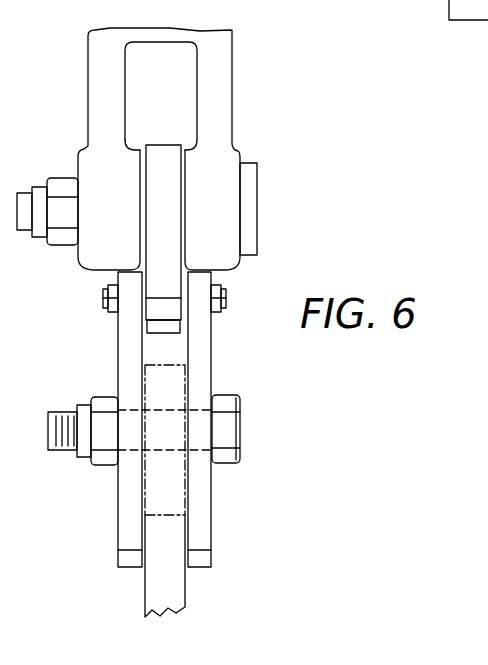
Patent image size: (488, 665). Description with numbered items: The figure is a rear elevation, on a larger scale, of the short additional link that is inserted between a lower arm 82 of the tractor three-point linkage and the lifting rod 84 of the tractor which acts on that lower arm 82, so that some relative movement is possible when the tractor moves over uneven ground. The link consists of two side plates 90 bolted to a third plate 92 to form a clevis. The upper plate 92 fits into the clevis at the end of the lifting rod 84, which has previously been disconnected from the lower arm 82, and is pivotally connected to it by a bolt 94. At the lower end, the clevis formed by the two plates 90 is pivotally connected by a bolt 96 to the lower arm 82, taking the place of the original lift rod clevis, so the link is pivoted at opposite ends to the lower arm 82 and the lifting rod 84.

The lifting rod 84 is at (232, 88).
The bolt 94 is at (257, 170).
The third plate 92 is at (170, 218).
The plates 90 is at (127, 347).
The bolt 96 is at (225, 428).
The lower arm 82 is at (175, 594).